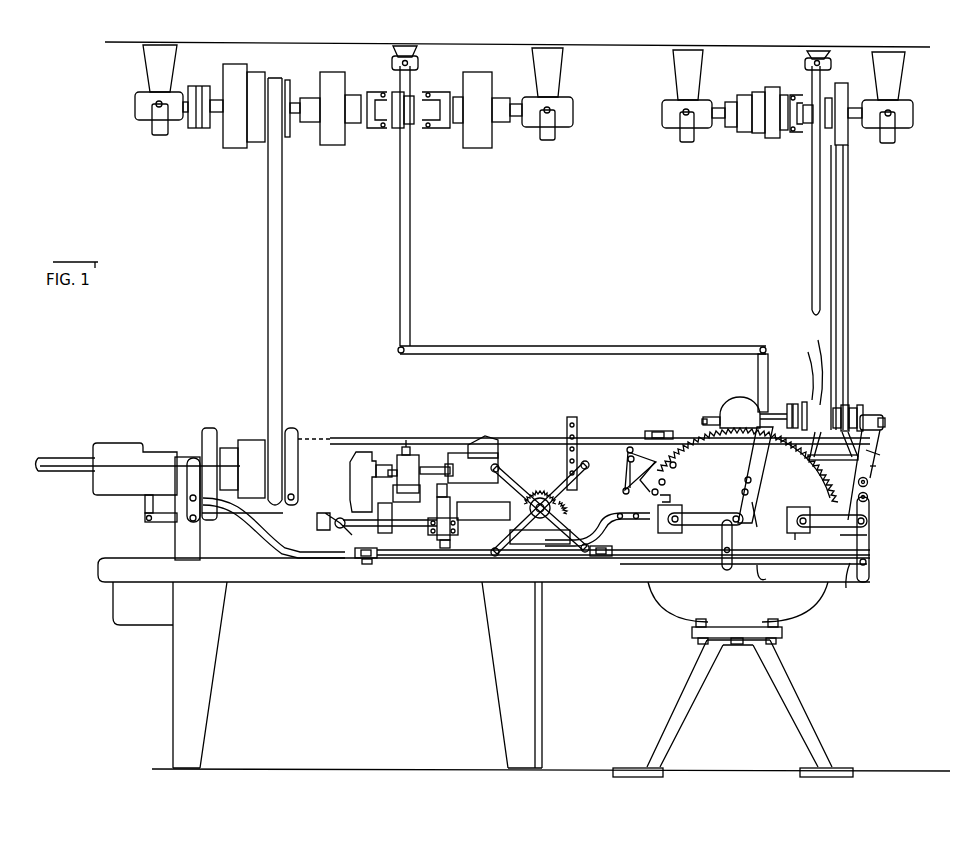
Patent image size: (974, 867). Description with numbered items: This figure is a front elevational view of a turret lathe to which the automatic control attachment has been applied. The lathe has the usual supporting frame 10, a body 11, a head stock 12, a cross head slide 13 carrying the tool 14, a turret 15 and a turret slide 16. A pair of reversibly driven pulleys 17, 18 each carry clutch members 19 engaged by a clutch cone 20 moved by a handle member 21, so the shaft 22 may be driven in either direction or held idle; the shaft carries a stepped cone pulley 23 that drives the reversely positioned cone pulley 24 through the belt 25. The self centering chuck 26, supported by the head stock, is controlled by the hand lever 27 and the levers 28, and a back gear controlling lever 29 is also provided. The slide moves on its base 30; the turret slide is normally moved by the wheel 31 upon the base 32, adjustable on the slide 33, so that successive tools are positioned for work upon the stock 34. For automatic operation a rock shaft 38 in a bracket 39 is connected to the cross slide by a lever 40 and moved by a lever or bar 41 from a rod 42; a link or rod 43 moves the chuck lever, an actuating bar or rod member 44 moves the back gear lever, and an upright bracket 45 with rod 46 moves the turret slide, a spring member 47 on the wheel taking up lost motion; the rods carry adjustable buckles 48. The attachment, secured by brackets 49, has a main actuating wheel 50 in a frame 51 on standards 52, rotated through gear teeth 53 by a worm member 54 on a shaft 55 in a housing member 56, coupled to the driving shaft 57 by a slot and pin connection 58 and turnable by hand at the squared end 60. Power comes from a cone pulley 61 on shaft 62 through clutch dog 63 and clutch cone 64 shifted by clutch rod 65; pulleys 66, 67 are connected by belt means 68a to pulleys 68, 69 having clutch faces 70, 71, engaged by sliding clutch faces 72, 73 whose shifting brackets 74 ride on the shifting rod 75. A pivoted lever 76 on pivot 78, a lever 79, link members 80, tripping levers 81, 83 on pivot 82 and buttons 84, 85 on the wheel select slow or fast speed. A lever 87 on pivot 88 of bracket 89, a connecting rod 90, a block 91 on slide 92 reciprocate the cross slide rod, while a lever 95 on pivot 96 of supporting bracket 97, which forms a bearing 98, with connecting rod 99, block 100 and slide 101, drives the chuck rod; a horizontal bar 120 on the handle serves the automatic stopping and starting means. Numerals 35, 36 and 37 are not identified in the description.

The supporting frame 10 is at (213, 668).
The body 11 is at (265, 584).
The head stock 12 is at (187, 454).
The cross head slide 13 is at (393, 491).
The tool 14 is at (413, 466).
The turret 15 is at (499, 443).
The turret slide 16 is at (536, 492).
The reversibly driven pulley 17 is at (344, 142).
The reversibly driven pulley 18 is at (488, 148).
The clutch members 19 is at (380, 132).
The clutch cone 20 is at (413, 126).
The handle member 21 is at (410, 230).
The shaft 22 is at (291, 120).
The cone pulley 23 is at (236, 146).
The cone pulley 24 is at (254, 438).
The belt 25 is at (282, 330).
The self centering chuck 26 is at (364, 453).
The hand lever 27 is at (192, 490).
The levers 28 is at (145, 514).
The back gear controlling lever 29 is at (294, 462).
The base 30 is at (372, 551).
The wheel 31 is at (541, 555).
The base 32 is at (480, 554).
The slide 33 is at (350, 554).
The stock 34 is at (54, 457).
The tool holder 35 is at (466, 452).
The clamp 36 is at (406, 452).
The tool rod 37 is at (441, 465).
The rock shaft 38 is at (432, 553).
The bracket 39 is at (421, 553).
The lever 40 is at (396, 548).
The lever or bar 41 is at (446, 548).
The rod 42 is at (540, 548).
The link or rod 43 is at (310, 556).
The actuating bar or rod member 44 is at (551, 437).
The upright bracket 45 is at (587, 460).
The rod 46 is at (618, 432).
The spring member 47 is at (585, 556).
The adjustable buckles 48 is at (360, 566).
The brackets 49 is at (611, 560).
The main actuating wheel 50 is at (869, 489).
The frame 51 is at (790, 606).
The standards 52 is at (790, 697).
The gear teeth 53 is at (875, 475).
The worm member 54 is at (740, 432).
The shaft 55 is at (713, 412).
The housing member 56 is at (741, 406).
The driving shaft 57 is at (804, 402).
The slot and pin connection 58 is at (791, 404).
The squared end 60 is at (703, 421).
The cone pulley 61 is at (748, 134).
The shaft 62 is at (719, 122).
The clutch dog 63 is at (786, 134).
The clutch cone 64 is at (807, 126).
The clutch rod 65 is at (812, 222).
The pulley 66 is at (830, 98).
The pulley 67 is at (850, 104).
The pulley 68 is at (840, 388).
The belt means 68a is at (848, 248).
The pulley 69 is at (850, 402).
The clutch face 70 is at (819, 352).
The clutch face 71 is at (860, 405).
The clutch face 72 is at (808, 355).
The clutch face 73 is at (885, 418).
The shifting bracket 74 is at (877, 440).
The shifting rod 75 is at (653, 431).
The pivoted lever 76 is at (627, 451).
The pivot 78 is at (628, 480).
The lever 79 is at (623, 491).
The link member 80 is at (628, 460).
The tripping lever 81 is at (659, 493).
The pivot 82 is at (641, 480).
The tripping lever 83 is at (671, 499).
The button 84 is at (666, 483).
The button 85 is at (677, 466).
The lever 87 is at (742, 572).
The pivot 88 is at (757, 492).
The bracket 89 is at (765, 466).
The connecting rod 90 is at (718, 546).
The block 91 is at (685, 545).
The slide 92 is at (660, 566).
The lever 95 is at (868, 560).
The pivot 96 is at (870, 483).
The supporting bracket 97 is at (878, 466).
The bearing 98 is at (887, 423).
The connecting rod 99 is at (835, 528).
The block 100 is at (800, 507).
The slide 101 is at (797, 534).
The horizontal bar 120 is at (572, 346).